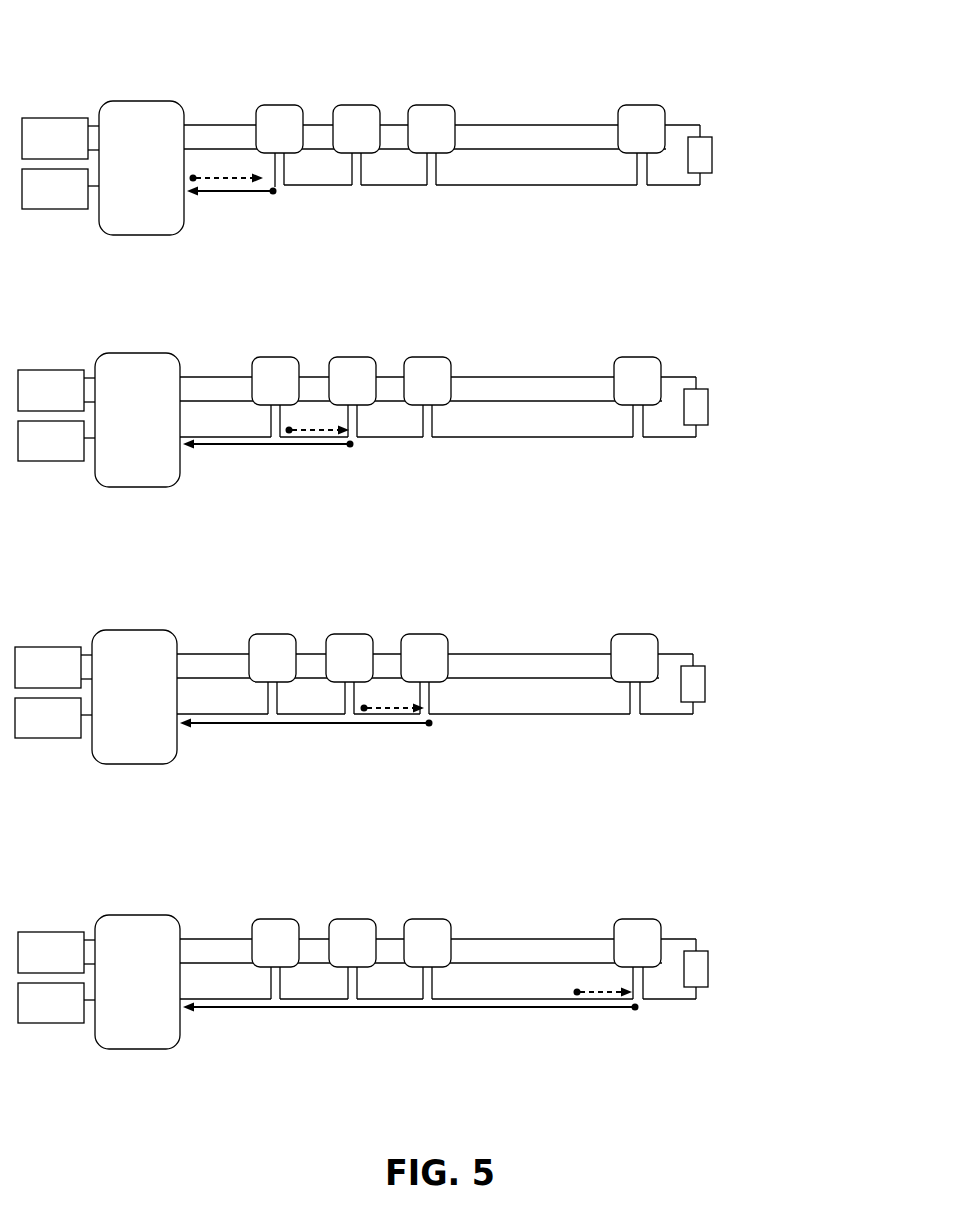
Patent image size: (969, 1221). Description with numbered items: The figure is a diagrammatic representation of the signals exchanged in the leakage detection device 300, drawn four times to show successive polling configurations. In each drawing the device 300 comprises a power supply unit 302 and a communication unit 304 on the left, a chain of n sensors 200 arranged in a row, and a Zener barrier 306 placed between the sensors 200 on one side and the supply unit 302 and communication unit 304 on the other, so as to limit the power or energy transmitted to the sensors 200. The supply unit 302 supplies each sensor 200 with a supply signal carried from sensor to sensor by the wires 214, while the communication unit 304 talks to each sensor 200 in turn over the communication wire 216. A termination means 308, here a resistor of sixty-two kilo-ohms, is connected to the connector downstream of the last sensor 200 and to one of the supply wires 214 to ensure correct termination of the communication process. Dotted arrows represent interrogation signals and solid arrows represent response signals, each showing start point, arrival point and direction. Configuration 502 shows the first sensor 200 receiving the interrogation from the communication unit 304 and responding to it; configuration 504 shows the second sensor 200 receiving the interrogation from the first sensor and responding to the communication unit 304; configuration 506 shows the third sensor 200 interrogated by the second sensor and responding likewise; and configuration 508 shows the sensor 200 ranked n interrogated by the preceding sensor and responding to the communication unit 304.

The leakage detection device 300 is at (410, 558).
The sensor 200 is at (274, 105).
The wires 214 is at (501, 125).
The communication wire 216 is at (325, 185).
The power supply unit 302 is at (52, 118).
The communication unit 304 is at (60, 209).
The Zener barrier 306 is at (149, 101).
The termination means 308 is at (710, 137).
The configuration 502 is at (740, 215).
The configuration 504 is at (718, 458).
The configuration 506 is at (756, 723).
The configuration 508 is at (728, 1040).